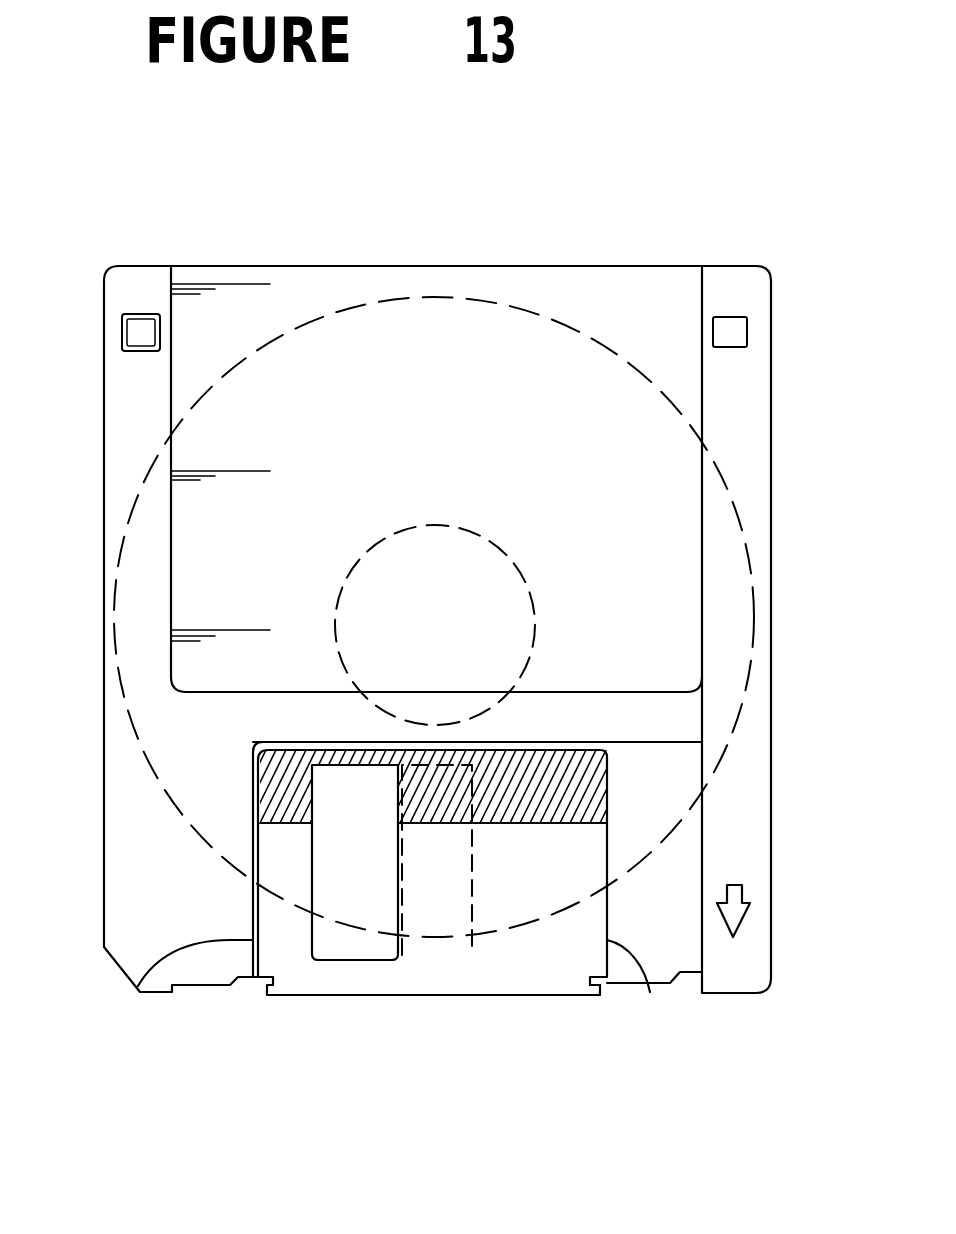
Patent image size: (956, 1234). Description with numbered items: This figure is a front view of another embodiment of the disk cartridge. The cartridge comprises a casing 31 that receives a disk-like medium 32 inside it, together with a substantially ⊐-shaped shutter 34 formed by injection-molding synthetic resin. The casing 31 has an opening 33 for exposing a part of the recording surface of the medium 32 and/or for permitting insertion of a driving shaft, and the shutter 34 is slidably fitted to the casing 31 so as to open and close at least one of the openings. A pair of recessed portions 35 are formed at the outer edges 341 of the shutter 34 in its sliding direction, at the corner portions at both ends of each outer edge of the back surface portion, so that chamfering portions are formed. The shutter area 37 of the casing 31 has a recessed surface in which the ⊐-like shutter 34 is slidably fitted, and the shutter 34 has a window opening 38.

The casing 31 is at (745, 461).
The disk-like medium 32 is at (545, 315).
The opening 33 is at (473, 912).
The shutter 34 is at (442, 970).
The outer edges 341 is at (145, 987).
The recessed portions 35 is at (258, 984).
The shutter area 37 is at (702, 838).
The window opening 38 is at (313, 905).